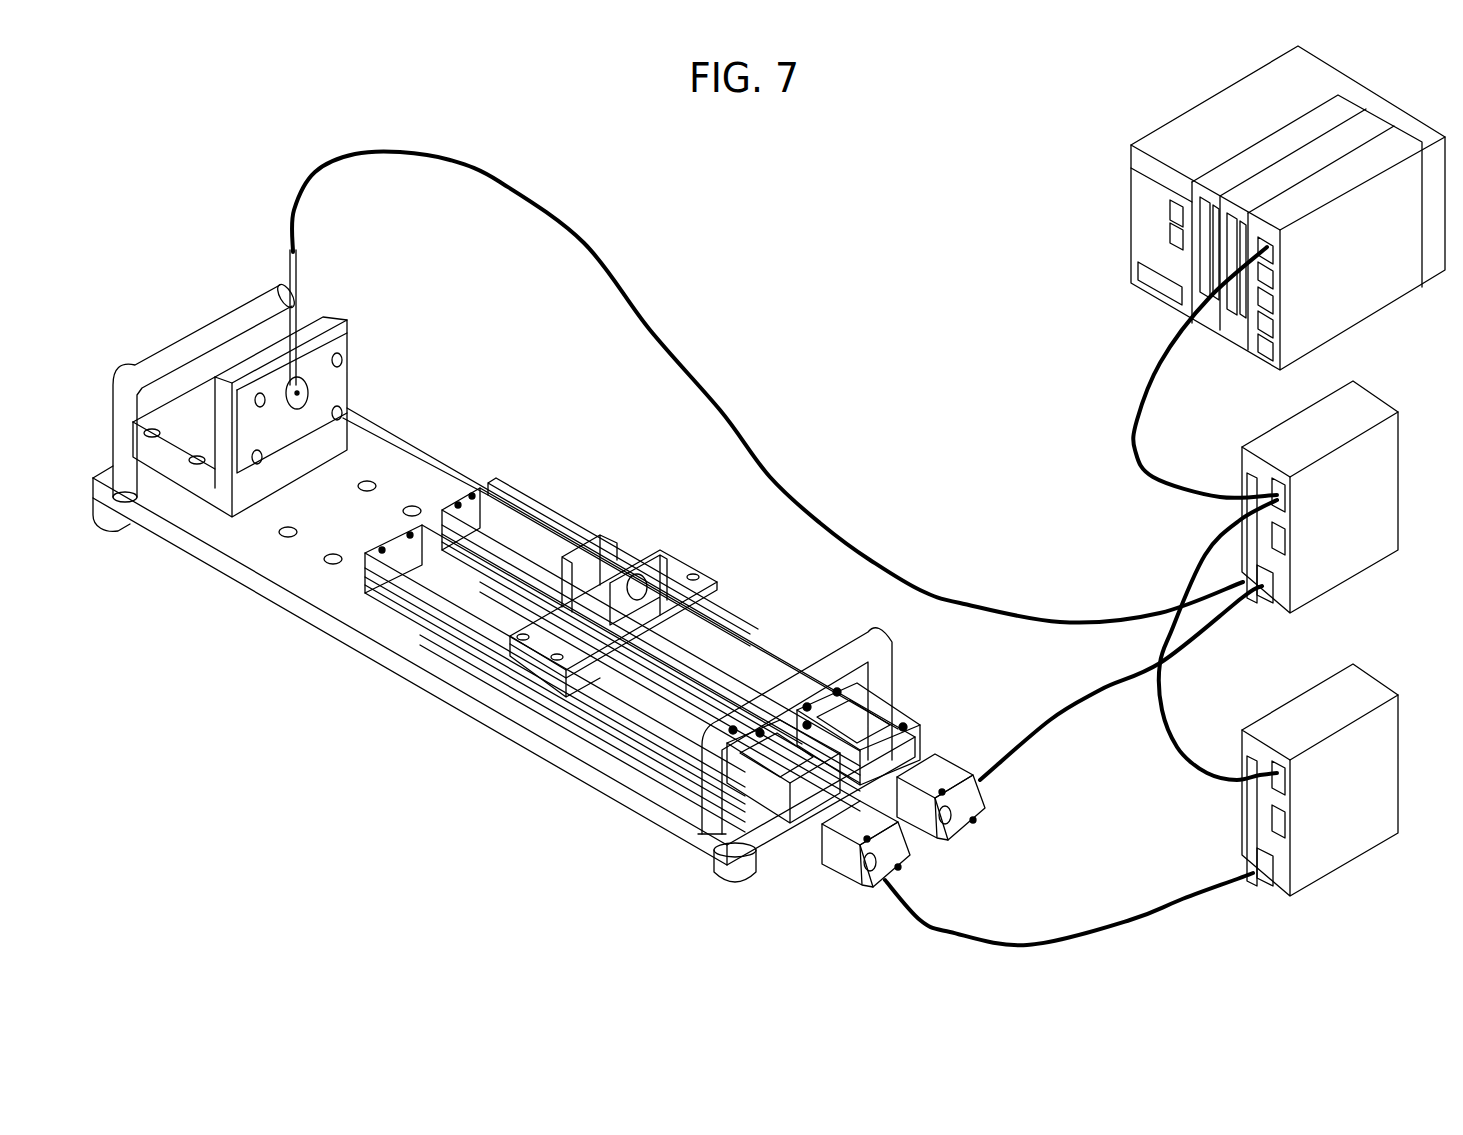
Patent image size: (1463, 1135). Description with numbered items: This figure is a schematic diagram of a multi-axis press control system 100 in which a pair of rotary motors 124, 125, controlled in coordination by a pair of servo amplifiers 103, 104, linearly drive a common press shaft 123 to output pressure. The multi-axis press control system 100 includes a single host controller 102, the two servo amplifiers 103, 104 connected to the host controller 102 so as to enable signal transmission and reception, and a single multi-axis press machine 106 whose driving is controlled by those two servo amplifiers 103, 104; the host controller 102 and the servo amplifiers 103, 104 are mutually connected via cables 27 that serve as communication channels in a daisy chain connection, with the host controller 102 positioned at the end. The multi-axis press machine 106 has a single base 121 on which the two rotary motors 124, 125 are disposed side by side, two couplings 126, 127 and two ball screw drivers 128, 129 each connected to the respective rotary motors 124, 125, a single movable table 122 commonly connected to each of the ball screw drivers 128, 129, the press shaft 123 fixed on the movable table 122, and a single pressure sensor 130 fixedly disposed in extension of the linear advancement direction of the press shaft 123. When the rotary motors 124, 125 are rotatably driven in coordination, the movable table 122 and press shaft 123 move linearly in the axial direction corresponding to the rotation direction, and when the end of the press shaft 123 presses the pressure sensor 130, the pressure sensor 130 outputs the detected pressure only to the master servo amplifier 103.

The multi-axis press control system 100 is at (270, 137).
The host controller 102 is at (1180, 134).
The servo amplifier 103 is at (1372, 405).
The servo amplifier 104 is at (1365, 692).
The cable 27 is at (1165, 356).
The multi-axis press machine 106 is at (326, 688).
The base 121 is at (272, 570).
The movable table 122 is at (683, 567).
The press shaft 123 is at (422, 452).
The rotary motor 124 is at (940, 768).
The rotary motor 125 is at (815, 848).
The coupling 126 is at (893, 713).
The coupling 127 is at (745, 808).
The ball screw driver 128 is at (733, 631).
The ball screw driver 129 is at (650, 692).
The pressure sensor 130 is at (302, 393).